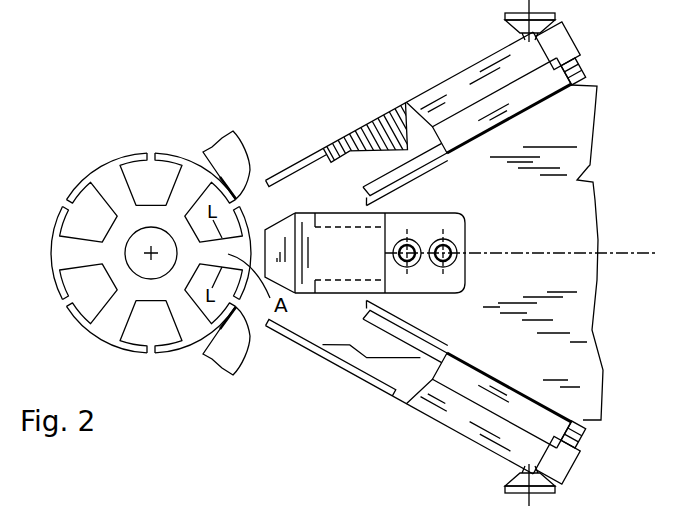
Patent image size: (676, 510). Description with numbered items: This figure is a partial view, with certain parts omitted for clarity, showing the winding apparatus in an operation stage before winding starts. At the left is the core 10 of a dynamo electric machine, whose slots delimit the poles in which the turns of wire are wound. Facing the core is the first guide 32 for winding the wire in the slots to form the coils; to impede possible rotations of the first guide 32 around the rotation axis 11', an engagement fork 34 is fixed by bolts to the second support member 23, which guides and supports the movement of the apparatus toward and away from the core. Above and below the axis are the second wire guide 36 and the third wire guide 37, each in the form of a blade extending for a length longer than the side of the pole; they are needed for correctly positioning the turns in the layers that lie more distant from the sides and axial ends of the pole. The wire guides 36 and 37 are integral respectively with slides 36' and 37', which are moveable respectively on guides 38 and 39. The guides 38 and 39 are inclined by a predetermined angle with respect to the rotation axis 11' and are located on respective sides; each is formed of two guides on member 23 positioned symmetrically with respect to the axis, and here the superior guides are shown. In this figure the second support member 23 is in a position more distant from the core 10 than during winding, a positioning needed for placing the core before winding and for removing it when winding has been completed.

The core 10 is at (96, 149).
The rotation axis 11' is at (526, 298).
The second support member 23 is at (597, 197).
The first guide 32 is at (272, 245).
The engagement fork 34 is at (353, 220).
The second wire guide 36 is at (296, 125).
The slide 36' is at (458, 105).
The third wire guide 37 is at (331, 385).
The slide 37' is at (455, 399).
The guide 38 is at (578, 80).
The guide 39 is at (578, 432).